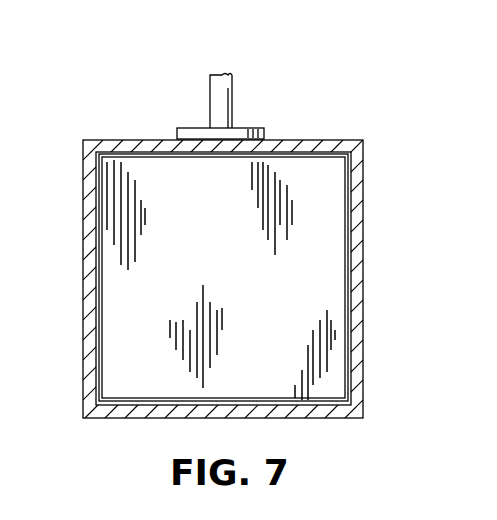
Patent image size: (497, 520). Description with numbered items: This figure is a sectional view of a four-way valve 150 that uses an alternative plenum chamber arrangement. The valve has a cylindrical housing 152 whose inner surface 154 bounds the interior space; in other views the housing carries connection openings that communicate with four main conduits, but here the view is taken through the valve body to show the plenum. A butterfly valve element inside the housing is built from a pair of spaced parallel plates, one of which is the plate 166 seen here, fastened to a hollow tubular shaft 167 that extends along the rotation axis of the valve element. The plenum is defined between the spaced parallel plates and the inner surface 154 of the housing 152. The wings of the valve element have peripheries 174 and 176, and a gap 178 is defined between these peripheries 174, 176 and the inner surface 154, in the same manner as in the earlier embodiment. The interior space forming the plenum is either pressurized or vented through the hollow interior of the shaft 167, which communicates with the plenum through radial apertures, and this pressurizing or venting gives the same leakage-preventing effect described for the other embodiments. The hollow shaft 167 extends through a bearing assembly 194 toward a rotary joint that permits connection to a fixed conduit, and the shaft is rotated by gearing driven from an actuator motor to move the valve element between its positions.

The four-way valve 150 is at (316, 58).
The cylindrical housing 152 is at (319, 146).
The inner surface 154 is at (132, 153).
The parallel plate 166 is at (175, 245).
The hollow tubular shaft 167 is at (230, 93).
The periphery 174 is at (109, 355).
The periphery 176 is at (336, 291).
The gap 178 is at (92, 165).
The bearing assembly 194 is at (262, 133).